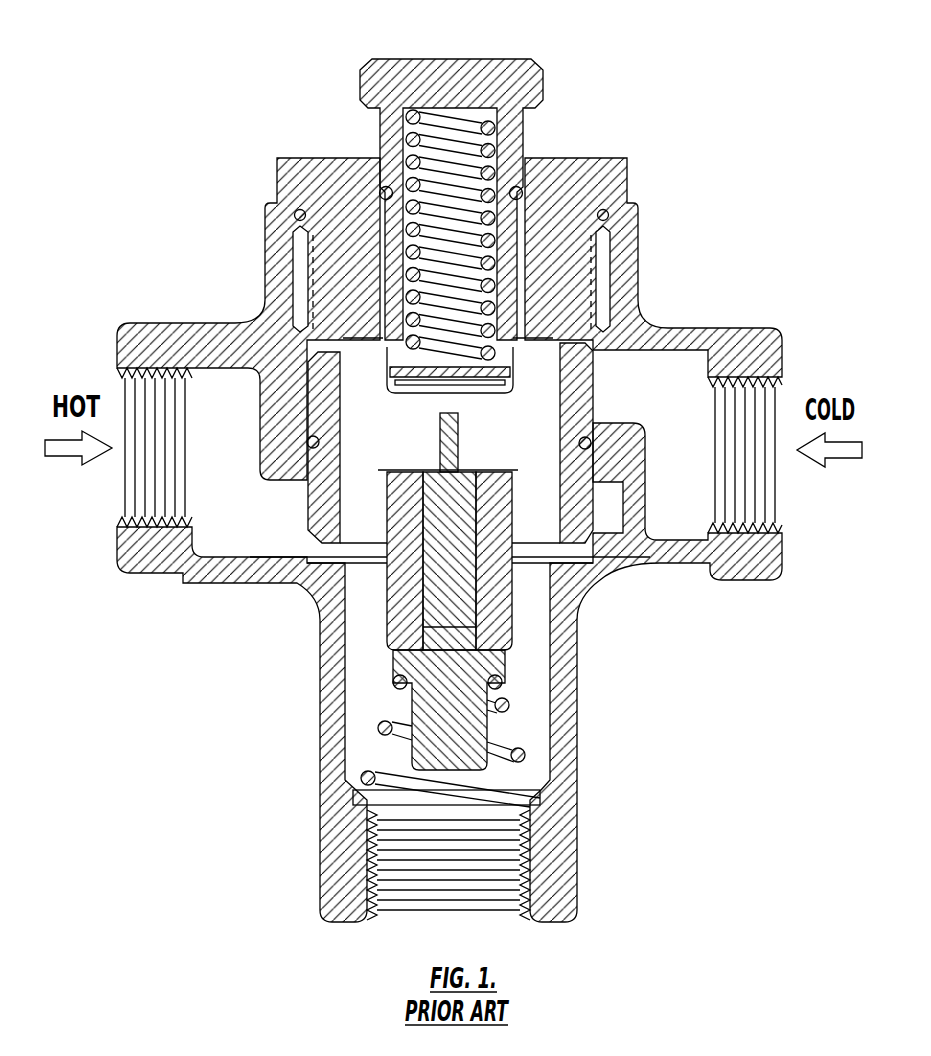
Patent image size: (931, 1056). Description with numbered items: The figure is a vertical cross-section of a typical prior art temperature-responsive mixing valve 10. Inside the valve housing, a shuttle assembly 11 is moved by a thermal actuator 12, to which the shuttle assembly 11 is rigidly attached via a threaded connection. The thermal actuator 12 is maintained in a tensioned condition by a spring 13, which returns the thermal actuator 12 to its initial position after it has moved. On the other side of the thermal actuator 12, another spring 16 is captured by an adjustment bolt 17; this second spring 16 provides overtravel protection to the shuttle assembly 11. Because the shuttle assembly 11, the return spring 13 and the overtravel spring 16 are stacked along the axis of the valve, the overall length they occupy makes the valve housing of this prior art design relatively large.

The temperature-responsive mixing valve 10 is at (218, 184).
The shuttle assembly 11 is at (360, 505).
The thermal actuator 12 is at (457, 660).
The spring 13 is at (402, 737).
The spring 16 is at (467, 150).
The adjustment bolt 17 is at (523, 69).